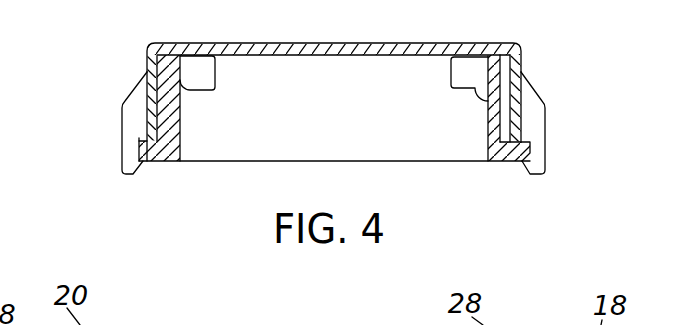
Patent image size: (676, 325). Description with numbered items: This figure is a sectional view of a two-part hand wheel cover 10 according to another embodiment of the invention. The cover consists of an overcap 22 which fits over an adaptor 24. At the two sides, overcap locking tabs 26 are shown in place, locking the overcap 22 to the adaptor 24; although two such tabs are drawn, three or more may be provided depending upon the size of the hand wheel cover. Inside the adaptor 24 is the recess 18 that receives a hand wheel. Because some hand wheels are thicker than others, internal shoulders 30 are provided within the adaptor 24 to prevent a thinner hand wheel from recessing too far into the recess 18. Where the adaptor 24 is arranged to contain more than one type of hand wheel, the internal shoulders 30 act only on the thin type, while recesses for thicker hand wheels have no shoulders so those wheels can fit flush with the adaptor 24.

The cover assembly 10 is at (381, 25).
The recess 18 is at (382, 132).
The overcap 22 is at (440, 43).
The adaptor 24 is at (172, 127).
The overcap locking tabs 26 is at (124, 128).
The internal shoulders 30 is at (202, 78).